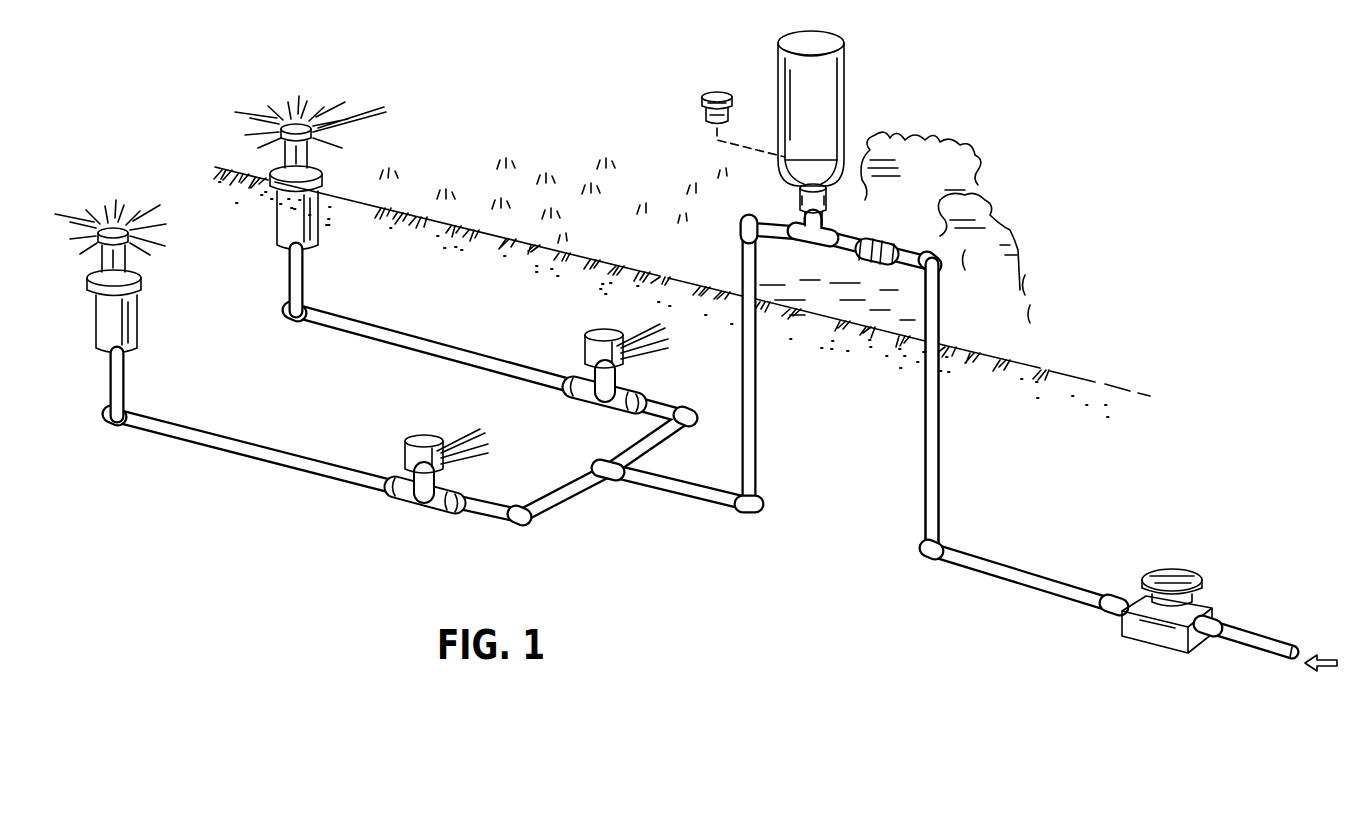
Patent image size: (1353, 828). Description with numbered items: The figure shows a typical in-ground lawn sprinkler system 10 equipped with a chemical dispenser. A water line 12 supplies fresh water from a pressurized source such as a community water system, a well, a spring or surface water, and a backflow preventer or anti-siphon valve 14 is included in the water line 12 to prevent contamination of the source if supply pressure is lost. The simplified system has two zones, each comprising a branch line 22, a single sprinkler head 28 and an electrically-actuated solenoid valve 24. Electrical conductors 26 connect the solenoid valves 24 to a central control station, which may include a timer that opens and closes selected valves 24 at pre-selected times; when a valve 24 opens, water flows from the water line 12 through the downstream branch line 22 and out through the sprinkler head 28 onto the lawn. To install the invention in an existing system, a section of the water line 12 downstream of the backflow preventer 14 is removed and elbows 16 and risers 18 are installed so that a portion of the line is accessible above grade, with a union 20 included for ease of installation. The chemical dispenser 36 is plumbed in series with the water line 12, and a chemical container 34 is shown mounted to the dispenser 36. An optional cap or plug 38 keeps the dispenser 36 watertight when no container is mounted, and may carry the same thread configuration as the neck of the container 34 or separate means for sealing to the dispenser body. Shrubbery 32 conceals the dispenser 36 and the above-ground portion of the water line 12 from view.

The in-ground lawn sprinkler system 10 is at (561, 137).
The water line 12 is at (1245, 647).
The backflow preventer or anti-siphon valve 14 is at (1140, 642).
The elbows 16 is at (926, 565).
The risers 18 is at (937, 433).
The union 20 is at (877, 245).
The branch line 22 is at (388, 338).
The solenoid valve 24 is at (600, 400).
The electrical conductors 26 is at (641, 338).
The sprinkler head 28 is at (141, 286).
The shrubbery 32 is at (1022, 290).
The chemical container 34 is at (843, 92).
The chemical dispenser 36 is at (803, 203).
The cap or plug 38 is at (713, 90).